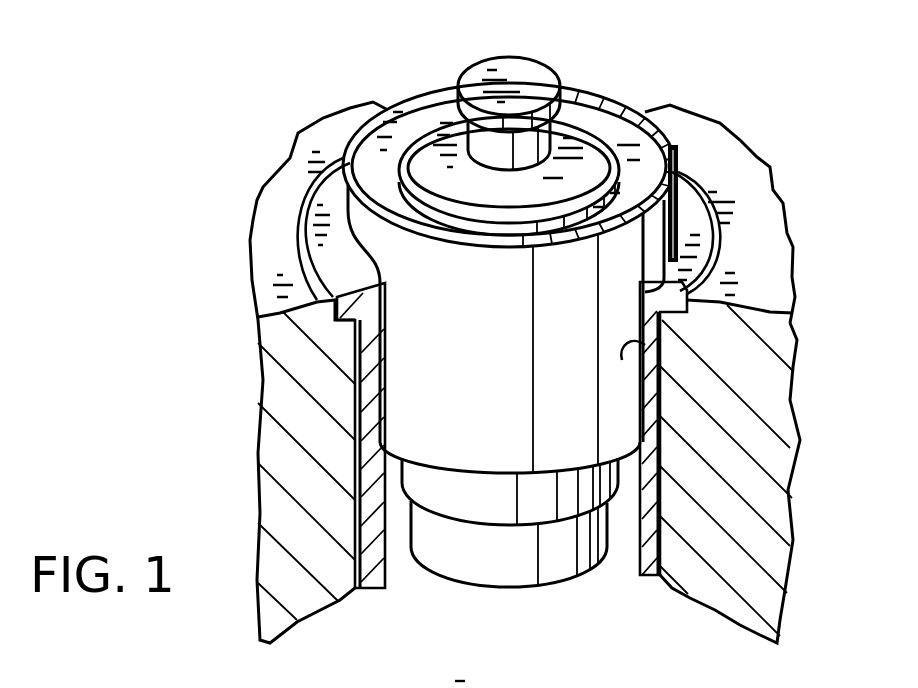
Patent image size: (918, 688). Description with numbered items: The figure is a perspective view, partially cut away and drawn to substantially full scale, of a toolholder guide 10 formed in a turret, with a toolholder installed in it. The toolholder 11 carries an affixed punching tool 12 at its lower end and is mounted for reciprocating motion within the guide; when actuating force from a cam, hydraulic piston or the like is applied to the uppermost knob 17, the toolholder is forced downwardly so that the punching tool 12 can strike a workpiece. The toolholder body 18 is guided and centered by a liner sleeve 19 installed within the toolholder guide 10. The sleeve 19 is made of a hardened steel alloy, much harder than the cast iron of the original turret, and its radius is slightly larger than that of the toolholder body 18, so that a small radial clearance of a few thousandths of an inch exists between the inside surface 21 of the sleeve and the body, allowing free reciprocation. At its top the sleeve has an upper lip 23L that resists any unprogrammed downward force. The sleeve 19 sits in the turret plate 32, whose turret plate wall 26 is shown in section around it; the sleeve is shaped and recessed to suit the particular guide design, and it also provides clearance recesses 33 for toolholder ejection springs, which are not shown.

The toolholder guide 10 is at (652, 347).
The toolholder 11 is at (588, 86).
The punching tool 12 is at (455, 570).
The knob 17 is at (513, 60).
The toolholder body 18 is at (677, 203).
The liner sleeve 19 is at (645, 517).
The inside surface 21 is at (355, 352).
The upper lip 23L is at (318, 257).
The turret plate wall 26 is at (763, 190).
The turret plate 32 is at (768, 258).
The clearance recess 33 is at (700, 190).